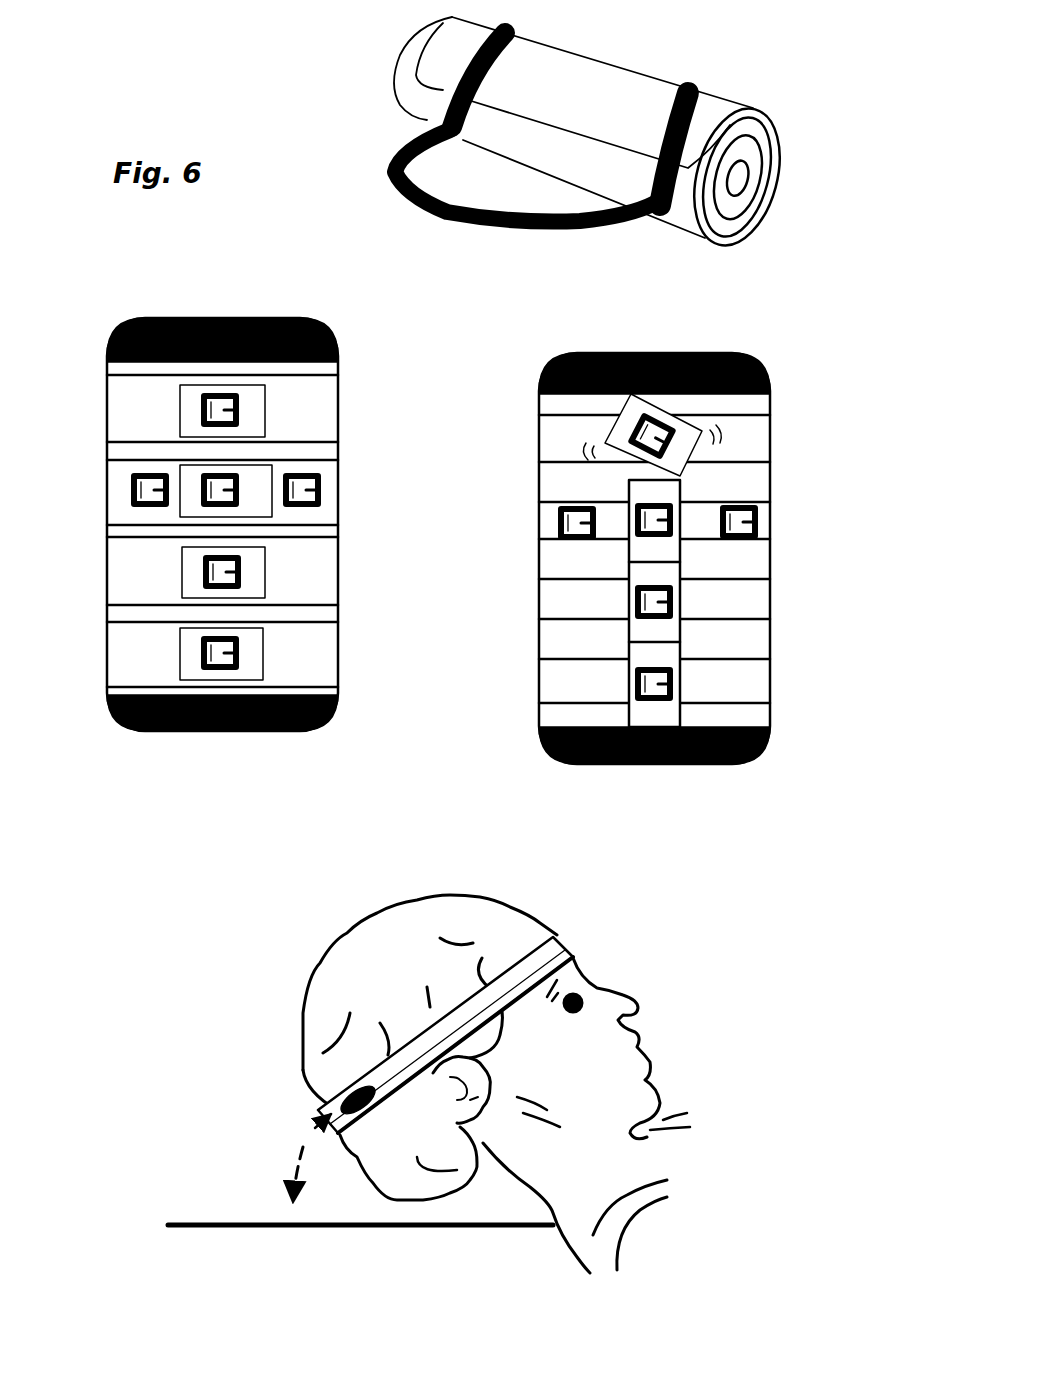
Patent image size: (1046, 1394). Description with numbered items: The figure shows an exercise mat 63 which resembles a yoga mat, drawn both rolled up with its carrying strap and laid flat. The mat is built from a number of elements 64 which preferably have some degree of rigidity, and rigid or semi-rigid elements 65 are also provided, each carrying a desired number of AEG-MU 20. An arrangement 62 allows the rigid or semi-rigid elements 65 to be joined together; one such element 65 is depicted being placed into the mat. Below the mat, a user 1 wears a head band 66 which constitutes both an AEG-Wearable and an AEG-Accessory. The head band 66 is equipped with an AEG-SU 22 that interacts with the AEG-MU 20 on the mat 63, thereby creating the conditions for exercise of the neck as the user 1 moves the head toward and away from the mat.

The user 1 is at (668, 1014).
The AEG-MU 20 is at (234, 410).
The AEG-SU 22 is at (381, 1081).
The arrangement 62 is at (713, 402).
The exercise mat 63 is at (584, 44).
The element 64 is at (303, 674).
The rigid or semi-rigid element 65 is at (194, 398).
The head band 66 is at (546, 949).